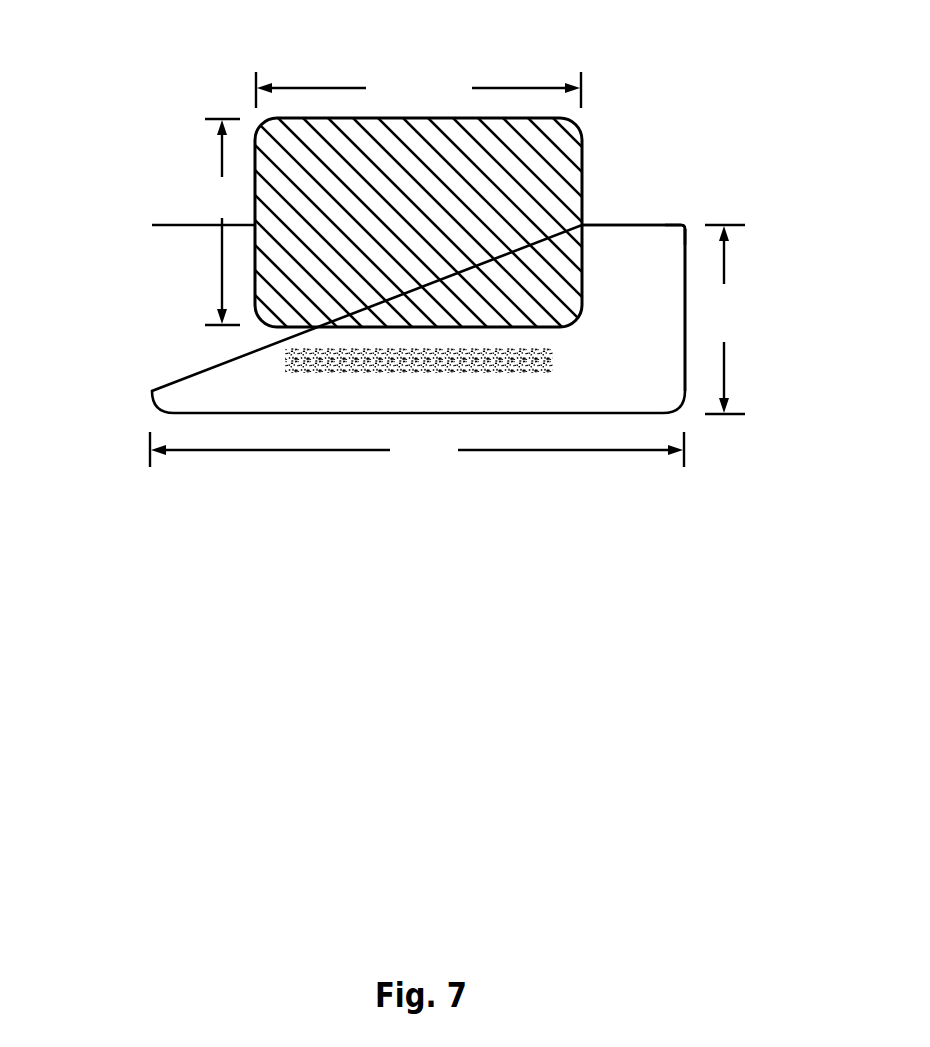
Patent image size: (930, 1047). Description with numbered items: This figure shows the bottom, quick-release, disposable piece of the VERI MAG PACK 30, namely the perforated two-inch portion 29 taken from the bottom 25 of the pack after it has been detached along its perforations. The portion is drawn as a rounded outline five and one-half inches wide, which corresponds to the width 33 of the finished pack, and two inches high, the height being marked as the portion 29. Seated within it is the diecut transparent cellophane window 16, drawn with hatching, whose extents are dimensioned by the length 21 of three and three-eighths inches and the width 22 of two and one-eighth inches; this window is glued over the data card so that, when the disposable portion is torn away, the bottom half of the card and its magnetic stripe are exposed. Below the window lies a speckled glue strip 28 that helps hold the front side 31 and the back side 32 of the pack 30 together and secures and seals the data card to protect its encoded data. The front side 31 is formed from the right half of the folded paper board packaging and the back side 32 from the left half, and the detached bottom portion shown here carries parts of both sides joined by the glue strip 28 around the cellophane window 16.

The diecut transparent cellophane window 16 is at (427, 229).
The length 21 is at (320, 87).
The width 22 is at (221, 155).
The bottom 25 is at (626, 224).
The glue strip 28 is at (553, 361).
The perforated two-inch portion 29 is at (725, 368).
The VERI MAG PACK 30 is at (135, 348).
The front side 31 is at (650, 310).
The back side 32 is at (688, 246).
The width 33 is at (287, 451).